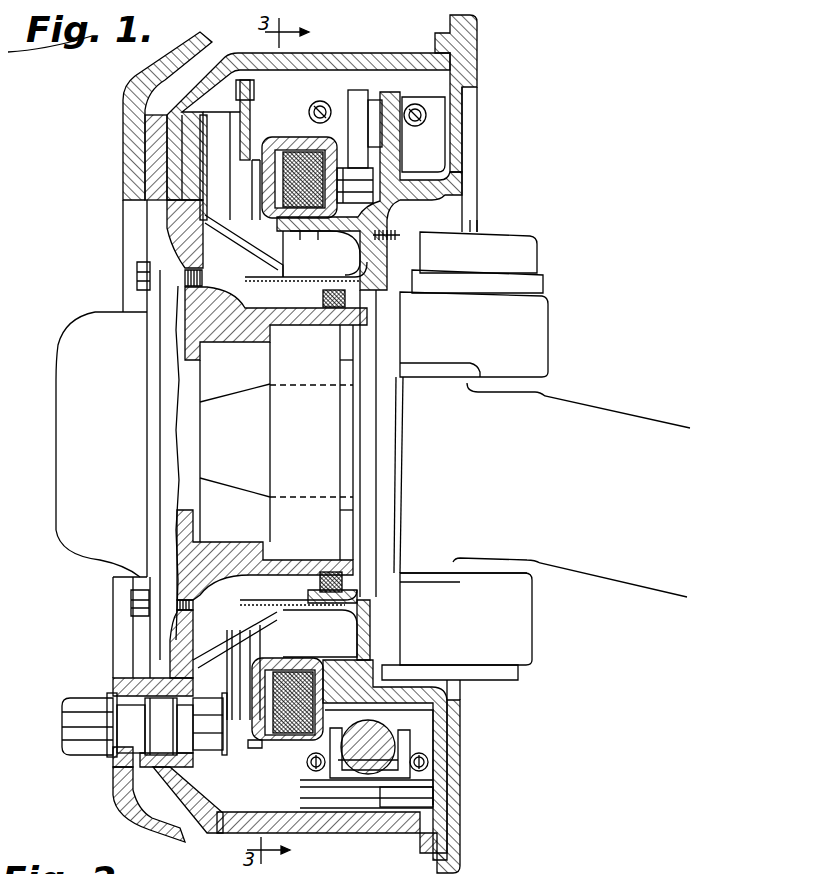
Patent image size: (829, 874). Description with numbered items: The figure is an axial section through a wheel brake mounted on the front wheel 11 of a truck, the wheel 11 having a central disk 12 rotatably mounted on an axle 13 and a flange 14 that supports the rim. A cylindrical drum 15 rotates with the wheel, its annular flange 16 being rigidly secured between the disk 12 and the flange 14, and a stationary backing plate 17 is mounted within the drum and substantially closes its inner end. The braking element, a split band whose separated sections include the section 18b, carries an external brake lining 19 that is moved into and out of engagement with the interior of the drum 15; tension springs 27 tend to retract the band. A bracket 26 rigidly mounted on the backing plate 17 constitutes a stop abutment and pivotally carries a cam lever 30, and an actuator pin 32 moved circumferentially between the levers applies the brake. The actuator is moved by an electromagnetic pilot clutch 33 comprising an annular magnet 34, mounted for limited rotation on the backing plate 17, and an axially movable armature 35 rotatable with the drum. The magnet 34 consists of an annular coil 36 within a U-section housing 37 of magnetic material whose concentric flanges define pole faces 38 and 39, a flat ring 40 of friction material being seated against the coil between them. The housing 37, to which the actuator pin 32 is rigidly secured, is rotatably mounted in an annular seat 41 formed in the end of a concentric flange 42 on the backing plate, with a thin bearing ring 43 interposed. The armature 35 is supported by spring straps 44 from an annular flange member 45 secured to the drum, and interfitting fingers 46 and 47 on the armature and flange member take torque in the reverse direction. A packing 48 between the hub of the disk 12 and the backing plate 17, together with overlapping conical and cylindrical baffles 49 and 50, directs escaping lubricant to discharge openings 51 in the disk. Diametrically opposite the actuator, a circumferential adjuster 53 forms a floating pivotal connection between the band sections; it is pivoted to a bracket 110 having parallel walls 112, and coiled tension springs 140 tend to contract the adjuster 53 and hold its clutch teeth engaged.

The front wheel 11 is at (116, 225).
The central disk 12 is at (182, 237).
The axle 13 is at (198, 428).
The flange 14 is at (143, 70).
The cylindrical drum 15 is at (383, 57).
The annular flange 16 is at (175, 157).
The stationary backing plate 17 is at (455, 153).
The band section 18b is at (422, 792).
The external brake lining 19 is at (422, 806).
The bracket 26 is at (397, 95).
The tension springs 27 is at (316, 103).
The cam lever 30 is at (352, 140).
The actuator pin 32 is at (401, 205).
The electromagnetic pilot clutch 33 is at (271, 127).
The annular magnet 34 is at (295, 722).
The armature 35 is at (258, 750).
The annular coil 36 is at (280, 744).
The housing 37 is at (350, 670).
The pole face 38 is at (270, 667).
The pole face 39 is at (268, 750).
The flat ring of friction material 40 is at (248, 655).
The annular seat 41 is at (343, 214).
The concentric flange 42 is at (343, 250).
The thin bearing ring 43 is at (310, 225).
The spring straps 44 is at (250, 164).
The annular flange member 45 is at (240, 132).
The radial fingers 46 is at (246, 706).
The laterally projecting fingers 47 is at (235, 760).
The packing 48 is at (321, 297).
The conical baffle 49 is at (253, 252).
The cylindrical baffle 50 is at (250, 270).
The discharge openings 51 is at (160, 672).
The circumferential adjuster 53 is at (398, 723).
The bracket 110 is at (418, 779).
The parallel walls 112 is at (402, 762).
The coiled tension springs 140 is at (428, 752).